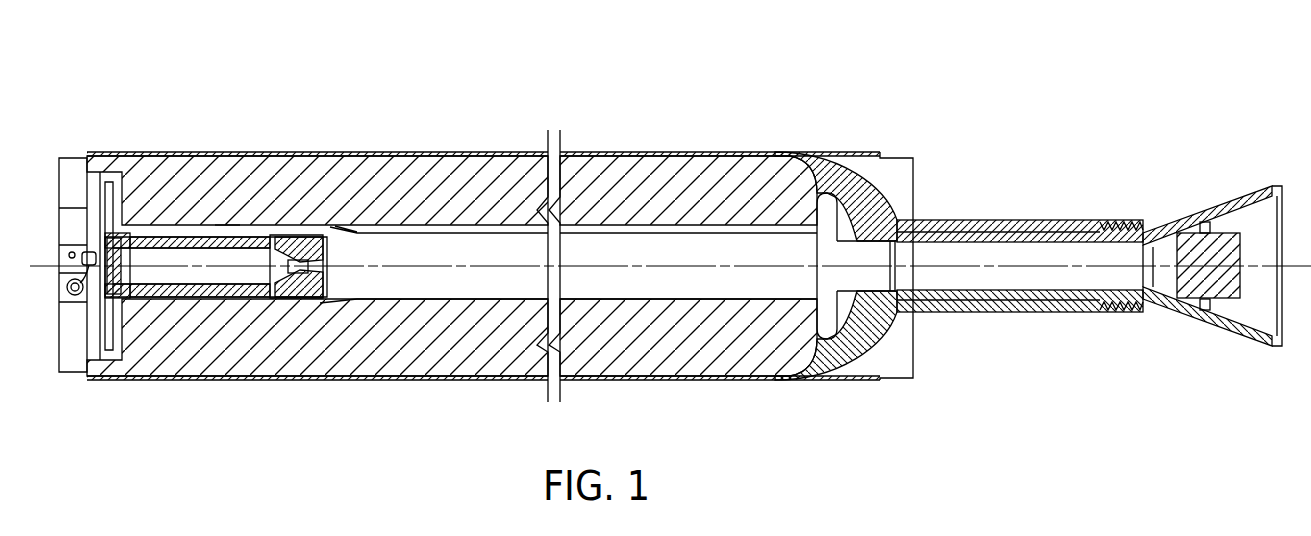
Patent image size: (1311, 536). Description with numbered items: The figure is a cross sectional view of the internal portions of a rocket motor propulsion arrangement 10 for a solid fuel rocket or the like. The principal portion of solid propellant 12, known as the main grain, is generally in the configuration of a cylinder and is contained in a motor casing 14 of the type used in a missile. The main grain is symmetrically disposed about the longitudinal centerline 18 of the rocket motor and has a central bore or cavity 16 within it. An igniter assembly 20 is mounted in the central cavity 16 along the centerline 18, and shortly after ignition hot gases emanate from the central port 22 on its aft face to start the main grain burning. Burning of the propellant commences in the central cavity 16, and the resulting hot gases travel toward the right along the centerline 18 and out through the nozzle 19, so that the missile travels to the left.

The rocket motor propulsion arrangement 10 is at (340, 410).
The solid propellant 12 is at (582, 167).
The motor casing 14 is at (407, 153).
The central bore or cavity 16 is at (343, 255).
The longitudinal centerline 18 is at (713, 263).
The nozzle 19 is at (1000, 235).
The igniter assembly 20 is at (226, 215).
The central port 22 is at (328, 273).